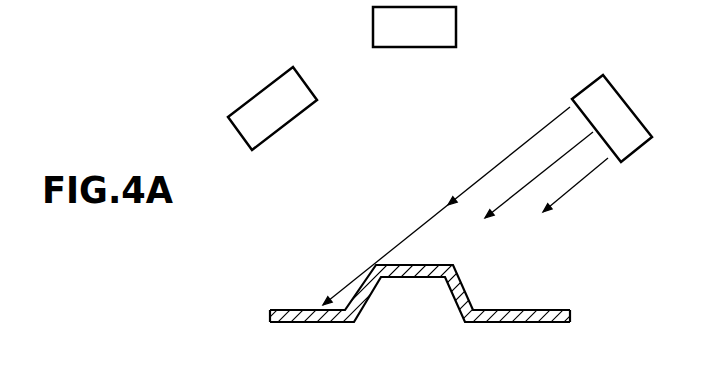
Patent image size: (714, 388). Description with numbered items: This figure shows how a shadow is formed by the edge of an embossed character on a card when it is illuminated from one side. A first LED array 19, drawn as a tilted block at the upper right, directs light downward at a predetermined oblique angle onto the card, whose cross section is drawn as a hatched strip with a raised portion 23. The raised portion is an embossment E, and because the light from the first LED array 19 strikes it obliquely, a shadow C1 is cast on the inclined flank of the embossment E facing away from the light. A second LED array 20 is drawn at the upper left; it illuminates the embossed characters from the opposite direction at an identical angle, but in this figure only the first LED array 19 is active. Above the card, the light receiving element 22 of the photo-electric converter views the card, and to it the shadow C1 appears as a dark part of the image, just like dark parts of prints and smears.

The first LED array 19 is at (642, 118).
The second LED array 20 is at (266, 83).
The light receiving element 22 is at (457, 33).
The workpiece (bent metal strip) 23 is at (534, 310).
The embossment E is at (406, 260).
The shadow C1 is at (356, 289).